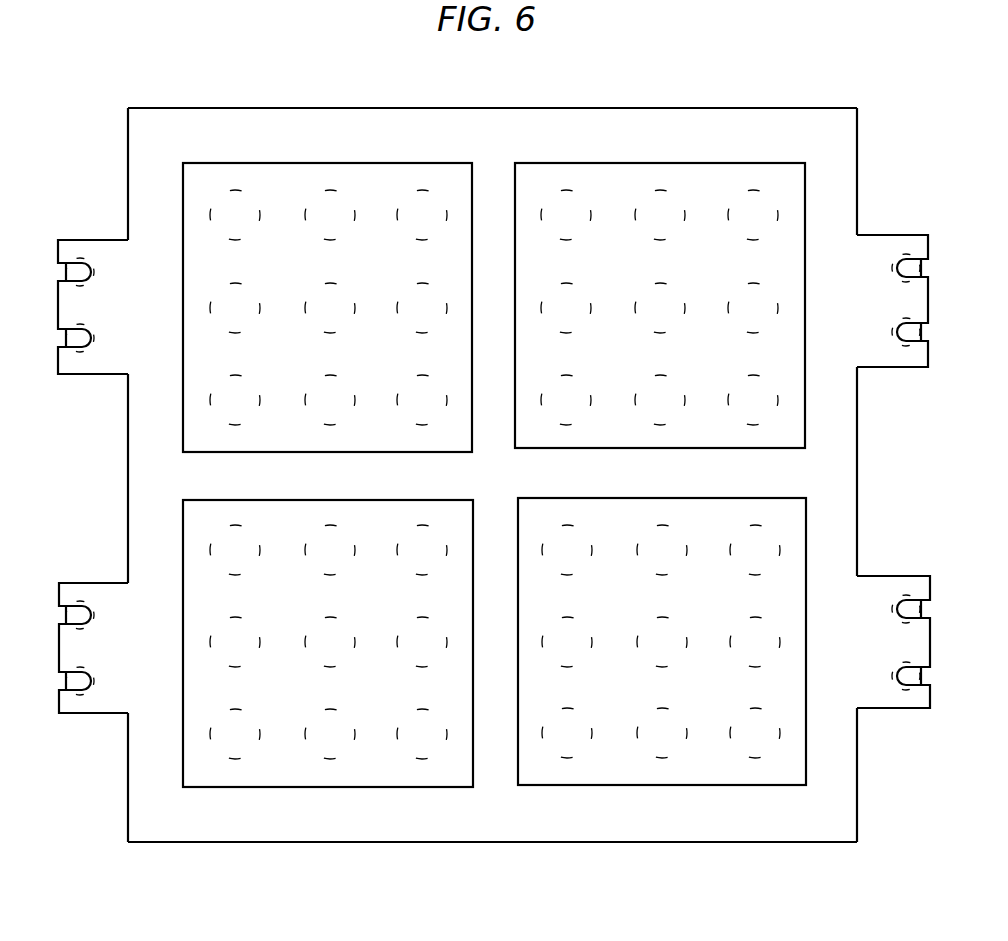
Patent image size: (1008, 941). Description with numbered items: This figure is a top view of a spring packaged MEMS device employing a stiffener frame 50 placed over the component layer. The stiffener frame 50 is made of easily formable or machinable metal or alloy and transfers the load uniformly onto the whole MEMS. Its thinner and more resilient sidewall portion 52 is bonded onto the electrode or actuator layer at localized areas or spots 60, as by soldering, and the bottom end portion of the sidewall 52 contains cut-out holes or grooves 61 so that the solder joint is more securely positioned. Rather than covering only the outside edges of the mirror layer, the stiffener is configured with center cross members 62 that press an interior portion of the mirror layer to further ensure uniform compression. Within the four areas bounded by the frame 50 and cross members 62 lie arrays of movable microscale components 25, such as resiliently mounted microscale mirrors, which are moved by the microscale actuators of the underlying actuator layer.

The stiffener frame 50 is at (688, 113).
The sidewall portion 52 is at (128, 164).
The localized bonding spots 60 is at (86, 700).
The cut-out holes or grooves 61 is at (68, 618).
The center cross members 62 is at (205, 452).
The movable microscale component 25 is at (770, 196).